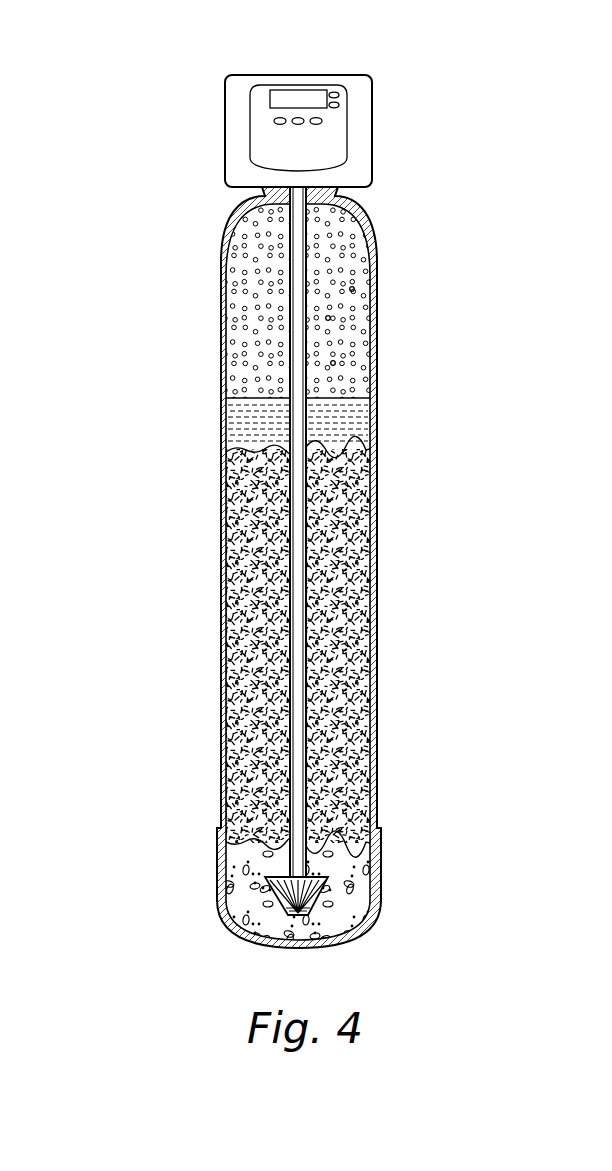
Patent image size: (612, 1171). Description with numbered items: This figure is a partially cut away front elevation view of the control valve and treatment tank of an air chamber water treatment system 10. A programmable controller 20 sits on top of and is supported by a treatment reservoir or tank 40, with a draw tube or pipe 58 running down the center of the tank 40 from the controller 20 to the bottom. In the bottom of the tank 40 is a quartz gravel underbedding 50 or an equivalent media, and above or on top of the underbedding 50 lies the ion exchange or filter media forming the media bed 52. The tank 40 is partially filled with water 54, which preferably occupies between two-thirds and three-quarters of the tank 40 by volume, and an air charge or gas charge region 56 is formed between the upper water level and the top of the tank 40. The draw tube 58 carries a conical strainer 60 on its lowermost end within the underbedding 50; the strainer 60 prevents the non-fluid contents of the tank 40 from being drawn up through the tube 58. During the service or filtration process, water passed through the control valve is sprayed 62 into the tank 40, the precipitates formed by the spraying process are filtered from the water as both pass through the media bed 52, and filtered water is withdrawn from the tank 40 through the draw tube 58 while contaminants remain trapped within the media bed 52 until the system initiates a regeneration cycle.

The air chamber water treatment system 10 is at (180, 86).
The programmable controller 20 is at (225, 134).
The treatment reservoir or tank 40 is at (380, 258).
The quartz gravel underbedding 50 is at (240, 855).
The media bed 52 is at (258, 595).
The water 54 is at (245, 417).
The air charge or gas charge region 56 is at (245, 298).
The draw tube or pipe 58 is at (300, 495).
The strainer 60 is at (275, 897).
The spray 62 is at (333, 363).